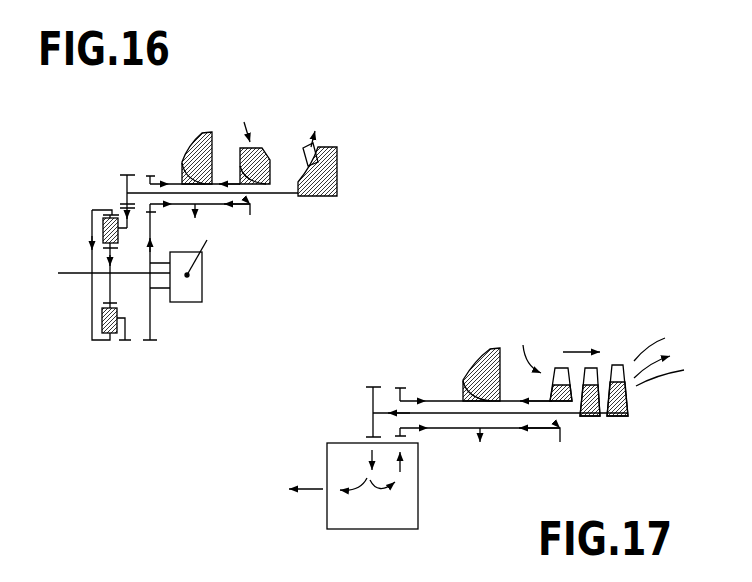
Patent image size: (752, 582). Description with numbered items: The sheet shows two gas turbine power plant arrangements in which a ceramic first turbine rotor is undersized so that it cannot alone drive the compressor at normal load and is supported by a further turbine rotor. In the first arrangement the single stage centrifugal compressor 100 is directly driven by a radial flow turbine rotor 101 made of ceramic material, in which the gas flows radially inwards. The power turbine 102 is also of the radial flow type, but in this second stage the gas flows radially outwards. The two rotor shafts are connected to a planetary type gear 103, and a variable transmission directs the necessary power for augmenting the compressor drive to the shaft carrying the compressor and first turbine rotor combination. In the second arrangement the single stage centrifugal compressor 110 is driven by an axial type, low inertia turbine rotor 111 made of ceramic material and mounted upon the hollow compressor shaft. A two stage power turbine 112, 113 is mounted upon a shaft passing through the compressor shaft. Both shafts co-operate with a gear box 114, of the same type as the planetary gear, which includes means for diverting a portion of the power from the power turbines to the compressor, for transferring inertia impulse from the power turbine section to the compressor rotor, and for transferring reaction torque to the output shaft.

In FIG. 16, the single stage centrifugal compressor 100 is at (197, 155).
In FIG. 16, the radial flow turbine rotor 101 is at (260, 167).
In FIG. 16, the power turbine 102 is at (337, 163).
In FIG. 16, the planetary type gear 103 is at (90, 218).
In FIG. 17, the single stage centrifugal compressor 110 is at (487, 358).
In FIG. 17, the axial type low inertia turbine rotor 111 is at (558, 372).
In FIG. 17, the first stage of two stage power turbine 112 is at (595, 415).
In FIG. 17, the second stage of two stage power turbine 113 is at (618, 403).
In FIG. 17, the gear box 114 is at (407, 495).